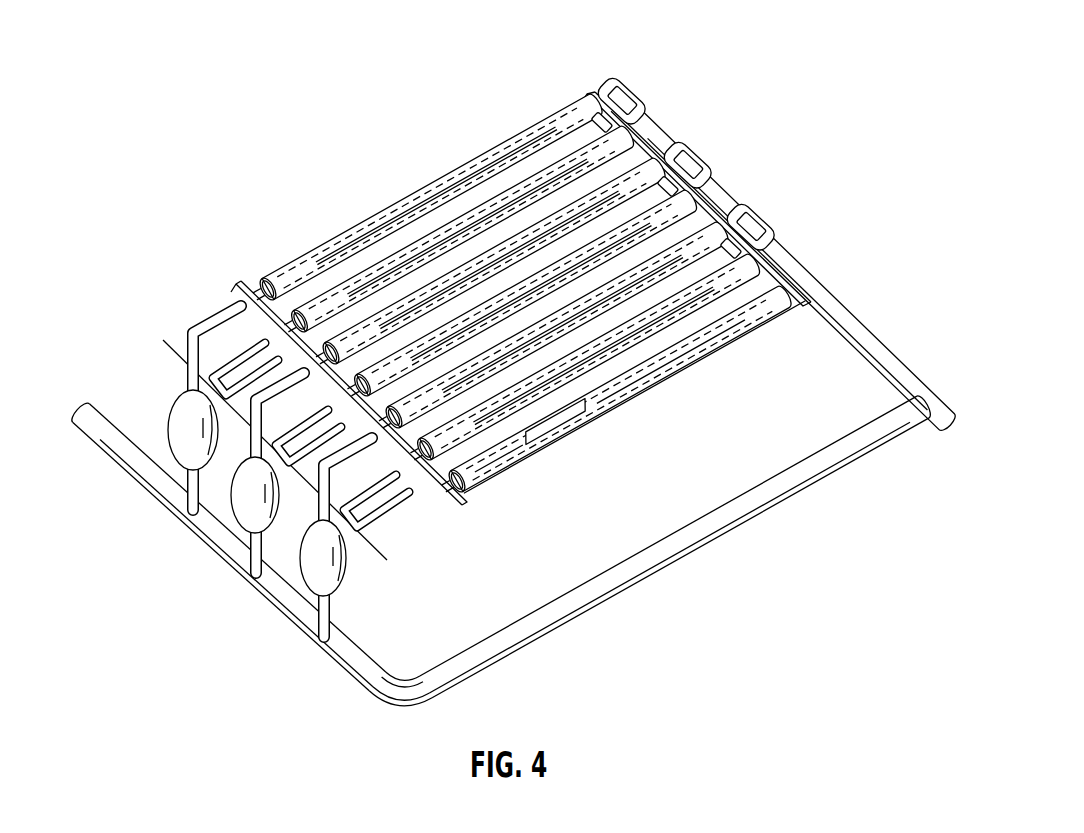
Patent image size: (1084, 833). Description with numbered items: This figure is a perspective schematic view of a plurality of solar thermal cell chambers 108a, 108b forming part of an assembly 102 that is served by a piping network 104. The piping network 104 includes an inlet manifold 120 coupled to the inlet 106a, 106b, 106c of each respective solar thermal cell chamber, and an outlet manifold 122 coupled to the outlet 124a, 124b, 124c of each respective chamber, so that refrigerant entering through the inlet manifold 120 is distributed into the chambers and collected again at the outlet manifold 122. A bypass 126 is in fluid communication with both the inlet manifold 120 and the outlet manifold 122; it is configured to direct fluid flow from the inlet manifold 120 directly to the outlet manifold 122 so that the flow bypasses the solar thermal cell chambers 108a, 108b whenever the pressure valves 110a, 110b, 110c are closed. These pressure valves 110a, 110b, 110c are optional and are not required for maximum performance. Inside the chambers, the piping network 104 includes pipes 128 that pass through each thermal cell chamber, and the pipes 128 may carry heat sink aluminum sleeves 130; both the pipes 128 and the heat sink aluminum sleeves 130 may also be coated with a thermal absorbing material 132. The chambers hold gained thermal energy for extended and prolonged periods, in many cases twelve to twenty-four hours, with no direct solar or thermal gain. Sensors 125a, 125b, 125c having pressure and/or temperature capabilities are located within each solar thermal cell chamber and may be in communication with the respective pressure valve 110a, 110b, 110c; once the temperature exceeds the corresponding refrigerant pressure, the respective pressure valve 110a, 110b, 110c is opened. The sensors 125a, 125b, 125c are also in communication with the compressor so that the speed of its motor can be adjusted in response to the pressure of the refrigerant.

The rack assembly 102 is at (516, 95).
The piping network 104 is at (83, 352).
The inlet 106a is at (190, 480).
The inlet 106b is at (254, 562).
The inlet 106c is at (320, 628).
The solar thermal cell chamber 108a is at (655, 99).
The solar thermal cell chamber 108b is at (727, 156).
The pressure valve 110a is at (178, 438).
The pressure valve 110b is at (245, 508).
The pressure valve 110c is at (330, 572).
The inlet manifold 120 is at (340, 660).
The outlet manifold 122 is at (855, 328).
The outlet 124a is at (646, 148).
The outlet 124b is at (743, 213).
The outlet 124c is at (800, 293).
The sensor 125a is at (320, 307).
The sensor 125b is at (400, 375).
The sensor 125c is at (455, 432).
The bypass 126 is at (625, 578).
The pipes 128 is at (630, 420).
The heat sink aluminum sleeves 130 is at (508, 472).
The thermal absorbing material 132 is at (557, 432).